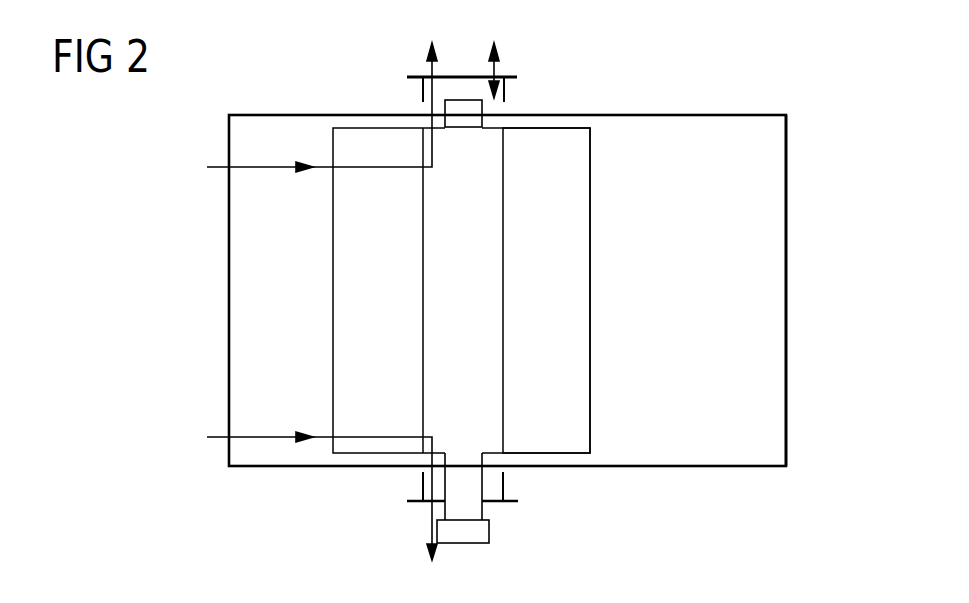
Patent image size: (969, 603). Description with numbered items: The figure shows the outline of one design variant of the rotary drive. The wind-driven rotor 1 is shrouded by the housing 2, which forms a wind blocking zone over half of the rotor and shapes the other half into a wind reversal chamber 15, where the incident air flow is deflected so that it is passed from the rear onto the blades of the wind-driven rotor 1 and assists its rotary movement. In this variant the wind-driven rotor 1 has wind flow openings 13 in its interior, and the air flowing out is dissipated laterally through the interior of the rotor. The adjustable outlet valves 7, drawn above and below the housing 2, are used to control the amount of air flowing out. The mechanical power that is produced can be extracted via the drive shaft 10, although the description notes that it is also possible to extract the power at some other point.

The wind-driven rotor 1 is at (550, 147).
The housing 2 is at (639, 147).
The adjustable outlet valves 7 is at (458, 75).
The drive shaft 10 is at (473, 510).
The wind flow openings 13 is at (448, 302).
The wind reversal chamber 15 is at (757, 303).